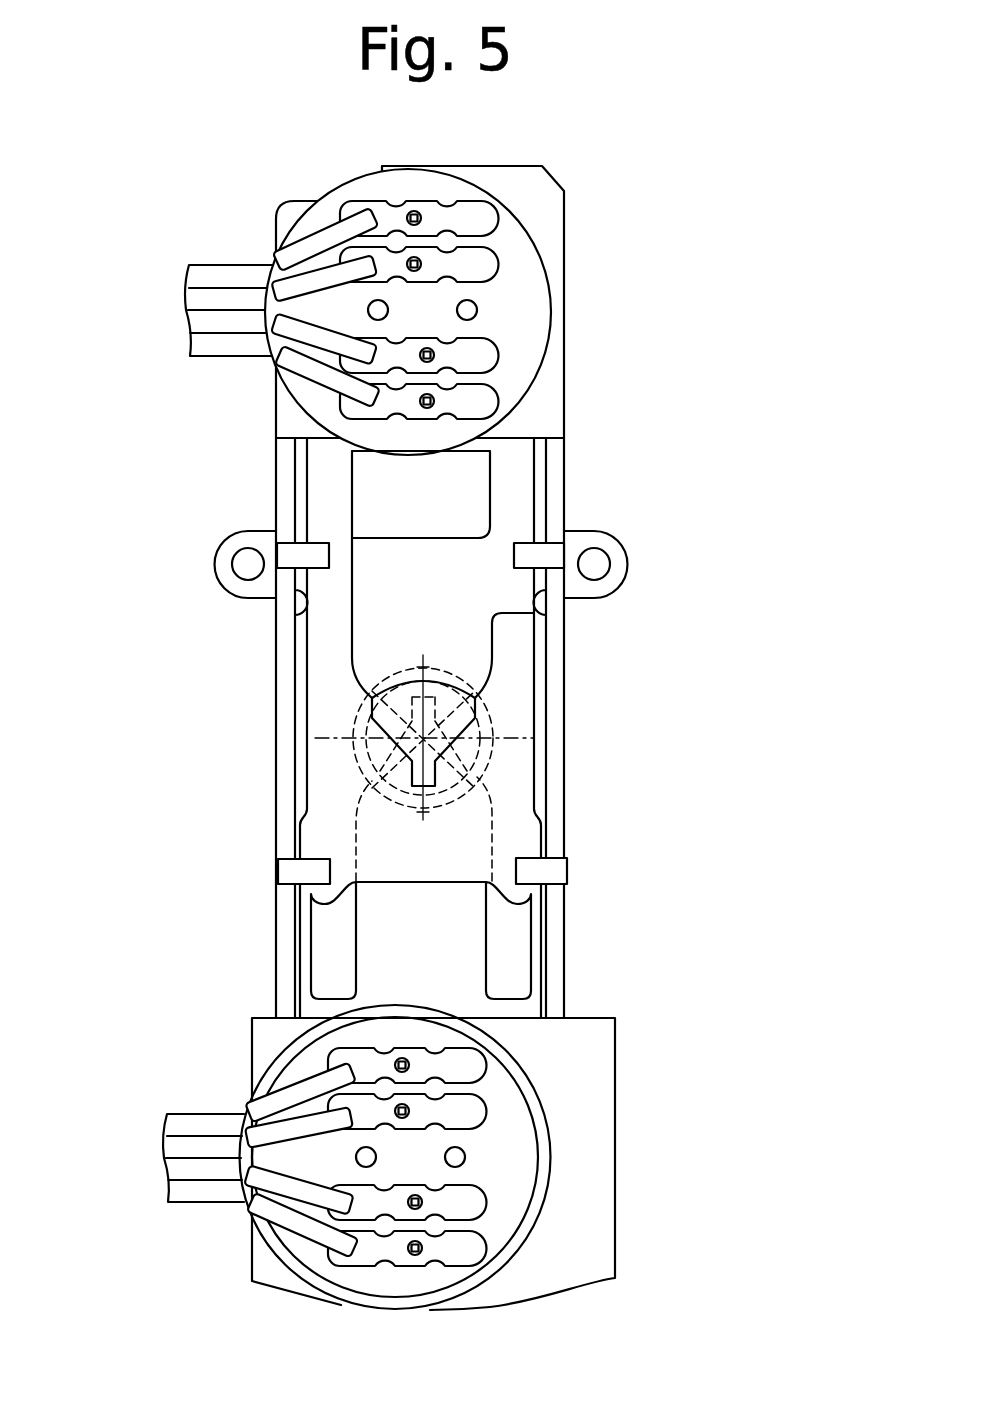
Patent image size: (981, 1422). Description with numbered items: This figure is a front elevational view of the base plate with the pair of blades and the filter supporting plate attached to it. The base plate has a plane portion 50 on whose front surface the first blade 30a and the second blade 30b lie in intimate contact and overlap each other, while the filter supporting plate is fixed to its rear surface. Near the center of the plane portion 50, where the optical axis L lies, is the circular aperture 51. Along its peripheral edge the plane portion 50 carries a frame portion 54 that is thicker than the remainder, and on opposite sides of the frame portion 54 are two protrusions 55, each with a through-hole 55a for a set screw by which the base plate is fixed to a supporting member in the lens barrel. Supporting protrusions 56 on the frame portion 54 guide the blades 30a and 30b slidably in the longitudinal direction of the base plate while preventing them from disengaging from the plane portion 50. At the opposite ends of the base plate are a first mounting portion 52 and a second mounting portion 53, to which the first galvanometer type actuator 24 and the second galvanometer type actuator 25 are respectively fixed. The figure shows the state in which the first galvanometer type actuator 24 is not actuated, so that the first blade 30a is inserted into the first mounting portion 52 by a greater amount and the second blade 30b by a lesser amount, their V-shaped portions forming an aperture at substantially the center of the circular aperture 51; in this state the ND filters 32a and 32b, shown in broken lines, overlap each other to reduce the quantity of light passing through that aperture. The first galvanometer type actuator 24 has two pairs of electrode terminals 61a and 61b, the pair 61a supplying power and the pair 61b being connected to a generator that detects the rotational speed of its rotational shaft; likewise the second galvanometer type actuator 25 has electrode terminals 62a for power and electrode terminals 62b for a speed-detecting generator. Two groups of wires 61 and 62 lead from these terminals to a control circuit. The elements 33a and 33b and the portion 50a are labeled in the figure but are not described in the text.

The first galvanometer type actuator 24 is at (546, 252).
The second galvanometer type actuator 25 is at (497, 1271).
The first blade 30a is at (334, 699).
The second blade 30b is at (457, 642).
The ND filter 32a is at (480, 711).
The ND filter 32b is at (407, 803).
The first guide rail 33a is at (324, 487).
The second guide rail 33b is at (513, 488).
The plane portion 50 is at (422, 723).
The upper plate portion 50a is at (375, 447).
The circular aperture 51 is at (405, 668).
The first mounting portion 52 is at (541, 407).
The second mounting portion 53 is at (593, 1238).
The frame portion 54 is at (557, 778).
The protrusion 55 is at (620, 537).
The through-hole 55a is at (604, 563).
The supporting protrusion 56 is at (545, 870).
The group of wires 61 is at (173, 264).
The pair of electrode terminals 61a is at (477, 257).
The pair of electrode terminals 61b is at (477, 396).
The group of wires 62 is at (150, 1113).
The pair of electrode terminals 62a is at (461, 1109).
The pair of electrode terminals 62b is at (461, 1244).
The optical axis L is at (467, 756).